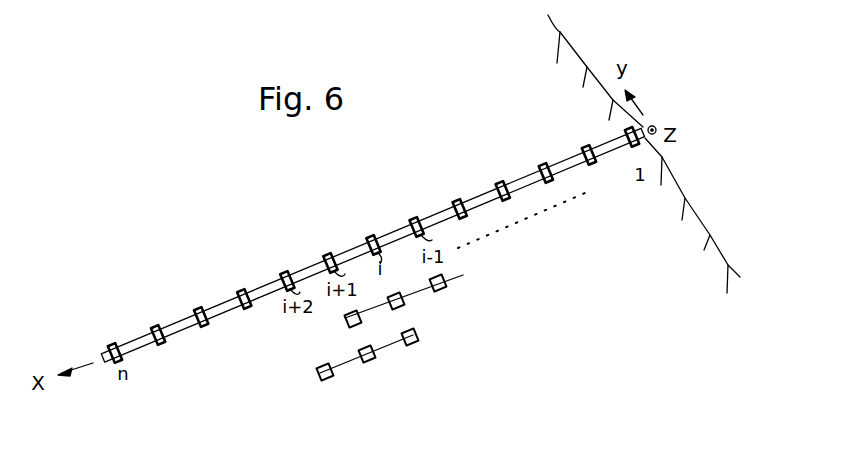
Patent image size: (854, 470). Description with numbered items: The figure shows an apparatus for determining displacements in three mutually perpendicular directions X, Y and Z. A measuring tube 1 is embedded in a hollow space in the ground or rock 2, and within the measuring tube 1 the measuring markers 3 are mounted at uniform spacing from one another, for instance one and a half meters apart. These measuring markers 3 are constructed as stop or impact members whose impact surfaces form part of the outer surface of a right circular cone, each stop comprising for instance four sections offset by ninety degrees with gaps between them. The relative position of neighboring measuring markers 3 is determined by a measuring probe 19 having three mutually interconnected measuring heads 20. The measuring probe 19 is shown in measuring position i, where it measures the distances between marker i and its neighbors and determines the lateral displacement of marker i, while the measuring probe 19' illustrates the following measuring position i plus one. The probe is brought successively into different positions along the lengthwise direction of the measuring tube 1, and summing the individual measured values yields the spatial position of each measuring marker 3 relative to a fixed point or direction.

The measuring tube 1 is at (347, 245).
The ground or rock 2 is at (548, 70).
The measuring markers 3 is at (500, 187).
The measuring probe 19 is at (421, 309).
The measuring probe in following measuring position 19' is at (366, 392).
The measuring heads 20 is at (345, 327).